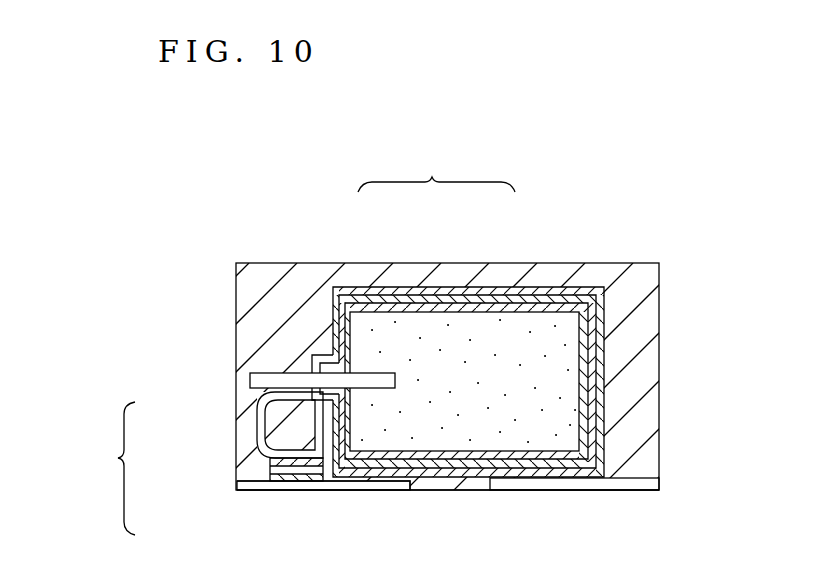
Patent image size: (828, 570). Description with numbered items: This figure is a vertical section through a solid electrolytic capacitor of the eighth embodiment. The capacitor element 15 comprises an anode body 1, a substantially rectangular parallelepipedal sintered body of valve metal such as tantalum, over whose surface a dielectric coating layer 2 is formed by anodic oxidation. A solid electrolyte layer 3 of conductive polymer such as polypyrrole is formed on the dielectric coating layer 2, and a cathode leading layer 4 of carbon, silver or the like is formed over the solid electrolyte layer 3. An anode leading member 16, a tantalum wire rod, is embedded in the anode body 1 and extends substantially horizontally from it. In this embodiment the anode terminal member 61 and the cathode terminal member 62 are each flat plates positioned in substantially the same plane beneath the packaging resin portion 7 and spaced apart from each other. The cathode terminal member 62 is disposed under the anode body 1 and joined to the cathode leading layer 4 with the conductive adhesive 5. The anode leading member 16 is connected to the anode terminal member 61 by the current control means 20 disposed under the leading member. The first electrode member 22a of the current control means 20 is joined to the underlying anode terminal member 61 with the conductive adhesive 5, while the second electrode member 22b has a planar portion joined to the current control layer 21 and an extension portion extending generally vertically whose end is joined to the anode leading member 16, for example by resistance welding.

The anode body 1 is at (377, 335).
The dielectric coating layer 2 is at (412, 307).
The solid electrolyte layer 3 is at (456, 297).
The cathode leading layer 4 is at (501, 290).
The conductive adhesive 5 is at (293, 483).
The packaging resin portion 7 is at (283, 298).
The capacitor element 15 is at (436, 167).
The anode leading member 16 is at (273, 375).
The current control means 20 is at (105, 468).
The current control layer 21 is at (270, 466).
The first electrode member 22a is at (260, 483).
The second electrode member 22b is at (257, 419).
The anode terminal member 61 is at (382, 486).
The cathode terminal member 62 is at (507, 488).